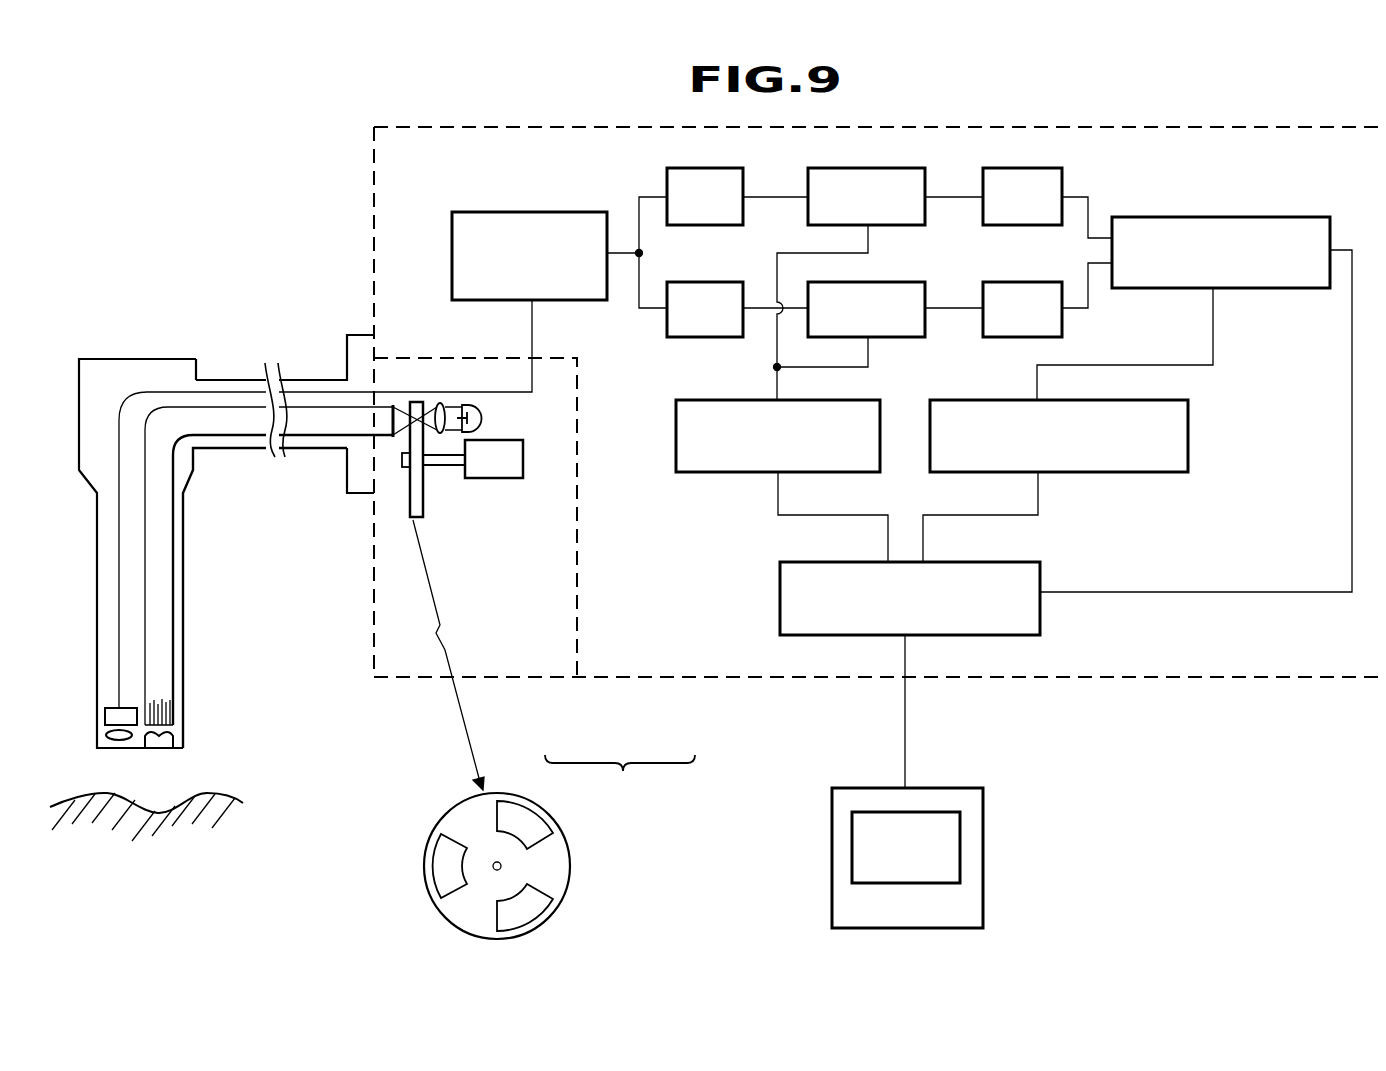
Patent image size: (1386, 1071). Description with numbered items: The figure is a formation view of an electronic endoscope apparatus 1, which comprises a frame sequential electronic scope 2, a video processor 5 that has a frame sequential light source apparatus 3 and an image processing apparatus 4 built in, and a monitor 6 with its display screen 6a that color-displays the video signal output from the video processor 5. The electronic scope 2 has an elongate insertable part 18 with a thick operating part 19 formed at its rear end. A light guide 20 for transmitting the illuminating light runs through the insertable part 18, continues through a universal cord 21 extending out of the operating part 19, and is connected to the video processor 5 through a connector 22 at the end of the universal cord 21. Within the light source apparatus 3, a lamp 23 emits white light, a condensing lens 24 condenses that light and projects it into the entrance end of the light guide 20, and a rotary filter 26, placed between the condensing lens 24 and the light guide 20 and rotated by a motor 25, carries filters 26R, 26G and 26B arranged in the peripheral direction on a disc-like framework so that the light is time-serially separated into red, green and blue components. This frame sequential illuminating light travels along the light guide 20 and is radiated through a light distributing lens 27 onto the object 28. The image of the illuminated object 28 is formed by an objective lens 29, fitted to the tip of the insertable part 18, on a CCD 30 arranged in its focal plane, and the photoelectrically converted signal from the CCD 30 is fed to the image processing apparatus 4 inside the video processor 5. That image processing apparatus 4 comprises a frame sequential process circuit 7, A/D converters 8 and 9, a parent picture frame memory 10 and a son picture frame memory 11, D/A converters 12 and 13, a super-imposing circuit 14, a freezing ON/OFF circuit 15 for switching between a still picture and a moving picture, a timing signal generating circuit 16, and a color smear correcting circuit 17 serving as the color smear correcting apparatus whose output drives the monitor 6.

The endoscope apparatus 1 is at (332, 305).
The frame sequential electronic scope 2 is at (192, 567).
The frame sequential light source apparatus 3 is at (542, 680).
The image processing apparatus 4 is at (707, 680).
The video processor 5 is at (620, 780).
The monitor 6 is at (983, 833).
The display screen 6a is at (960, 866).
The frame sequential process circuit 7 is at (575, 212).
The A/D converter 8 is at (707, 168).
The A/D converter 9 is at (720, 282).
The parent picture frame memory 10 is at (871, 168).
The son picture frame memory 11 is at (892, 282).
The D/A converter 12 is at (1020, 168).
The D/A converter 13 is at (1042, 282).
The super-imposing circuit 14 is at (1282, 217).
The freezing ON/OFF circuit 15 is at (675, 420).
The timing signal generating circuit 16 is at (1190, 425).
The color smear correcting circuit 17 is at (1043, 562).
The insertable part 18 is at (184, 643).
The operating part 19 is at (79, 393).
The light guide 20 is at (165, 690).
The universal cord 21 is at (231, 383).
The connector 22 is at (342, 359).
The lamp 23 is at (475, 405).
The condensing lens 24 is at (440, 402).
The motor 25 is at (508, 478).
The rotary filter 26 is at (425, 512).
The R filter 26R is at (425, 860).
The G filter 26G is at (553, 822).
The B filter 26B is at (553, 905).
The light distributing lens 27 is at (184, 743).
The object 28 is at (243, 803).
The objective lens 29 is at (102, 738).
The CCD 30 is at (105, 716).